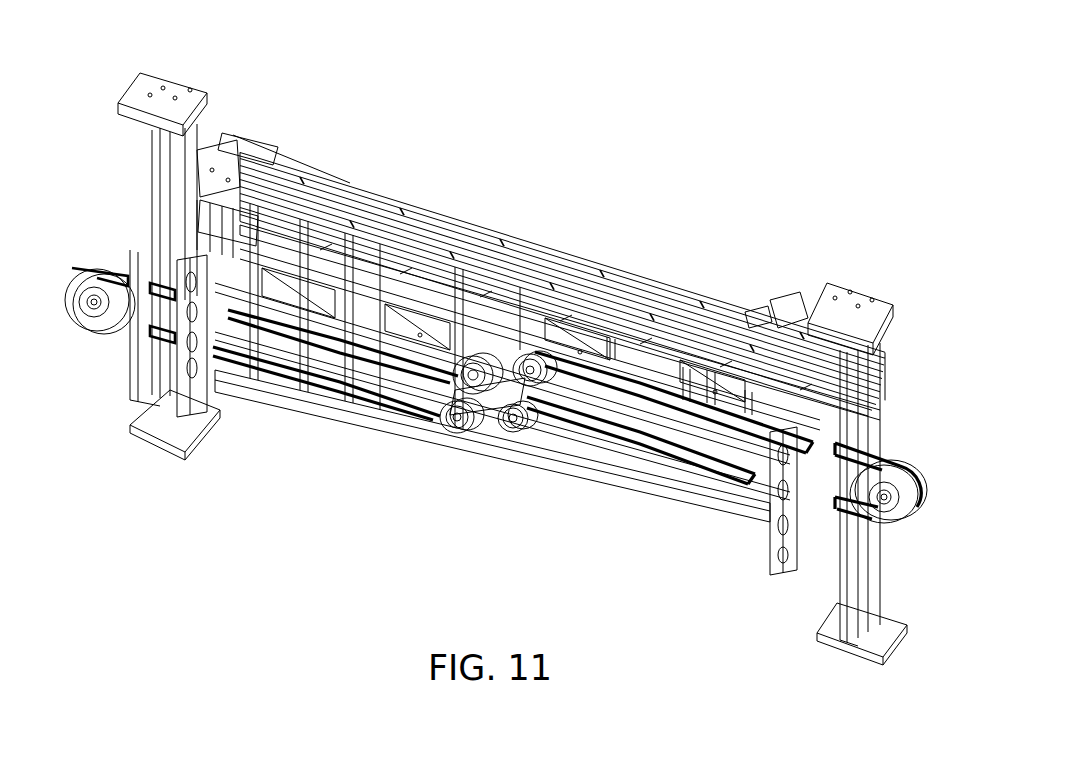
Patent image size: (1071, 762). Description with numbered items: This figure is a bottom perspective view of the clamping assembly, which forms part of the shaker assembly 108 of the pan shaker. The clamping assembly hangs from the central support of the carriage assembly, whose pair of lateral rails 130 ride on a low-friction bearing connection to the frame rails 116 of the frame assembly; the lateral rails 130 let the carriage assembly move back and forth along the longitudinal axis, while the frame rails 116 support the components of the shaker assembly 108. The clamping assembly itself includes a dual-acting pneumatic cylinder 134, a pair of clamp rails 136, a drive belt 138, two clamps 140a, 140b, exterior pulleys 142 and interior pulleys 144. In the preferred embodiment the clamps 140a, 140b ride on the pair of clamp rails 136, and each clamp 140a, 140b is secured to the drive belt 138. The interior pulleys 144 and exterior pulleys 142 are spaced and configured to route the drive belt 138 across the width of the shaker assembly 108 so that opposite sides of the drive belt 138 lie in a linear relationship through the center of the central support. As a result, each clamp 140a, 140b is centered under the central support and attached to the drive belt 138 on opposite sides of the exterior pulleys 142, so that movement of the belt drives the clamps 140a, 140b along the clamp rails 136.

The shaker assembly 108 is at (320, 592).
The frame rails 116 is at (147, 107).
The lateral rails 130 is at (588, 273).
The dual-acting pneumatic cylinder 134 is at (658, 383).
The clamp rails 136 is at (303, 302).
The drive belt 138 is at (282, 327).
The clamp 140a is at (183, 357).
The clamp 140b is at (773, 507).
The exterior pulleys 142 is at (75, 298).
The interior pulleys 144 is at (493, 378).